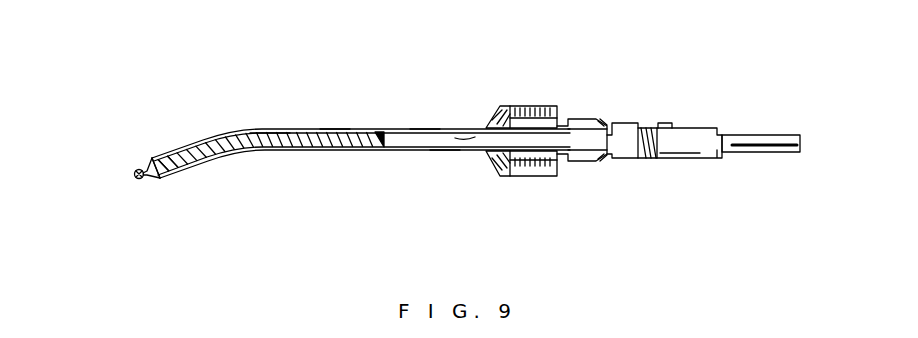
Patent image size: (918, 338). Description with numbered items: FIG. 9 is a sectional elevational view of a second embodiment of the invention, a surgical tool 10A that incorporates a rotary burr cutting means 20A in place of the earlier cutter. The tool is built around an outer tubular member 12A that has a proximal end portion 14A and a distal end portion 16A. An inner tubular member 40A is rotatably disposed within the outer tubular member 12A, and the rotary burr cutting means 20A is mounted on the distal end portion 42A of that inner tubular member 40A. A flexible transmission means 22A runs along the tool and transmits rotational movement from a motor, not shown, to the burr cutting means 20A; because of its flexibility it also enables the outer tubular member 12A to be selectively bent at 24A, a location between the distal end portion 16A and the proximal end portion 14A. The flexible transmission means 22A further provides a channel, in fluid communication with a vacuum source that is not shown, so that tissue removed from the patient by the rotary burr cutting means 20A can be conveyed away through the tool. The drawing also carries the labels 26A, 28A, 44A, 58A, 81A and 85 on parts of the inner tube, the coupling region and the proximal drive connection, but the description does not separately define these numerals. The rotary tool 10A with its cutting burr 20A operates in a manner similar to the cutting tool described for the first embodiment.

The surgical tool 10A is at (462, 53).
The outer tubular member 12A is at (443, 150).
The proximal end portion 14A is at (558, 143).
The distal end portion 16A is at (168, 174).
The rotary burr cutting means 20A is at (132, 163).
The flexible transmission means 22A is at (292, 150).
The bend 24A is at (229, 129).
The inner member 26A is at (460, 135).
The outer tube 28A is at (333, 128).
The inner tubular member 40A is at (420, 128).
The distal end portion of the inner tubular member 42A is at (172, 162).
The coupling nut 44A is at (537, 152).
The inner tube 58A is at (261, 129).
The cable 81A is at (750, 133).
The lumen 85 is at (384, 153).